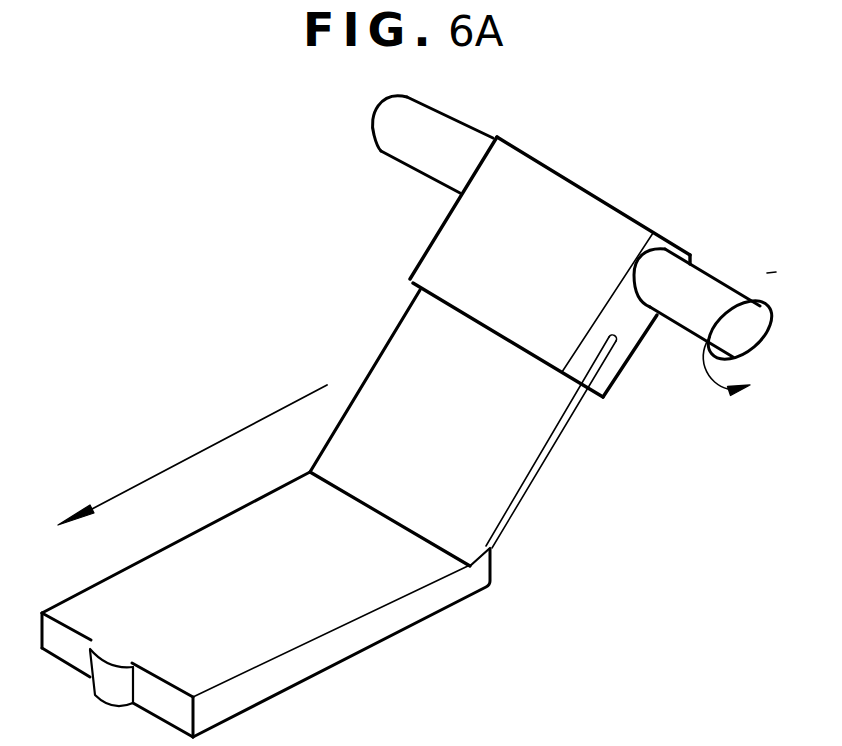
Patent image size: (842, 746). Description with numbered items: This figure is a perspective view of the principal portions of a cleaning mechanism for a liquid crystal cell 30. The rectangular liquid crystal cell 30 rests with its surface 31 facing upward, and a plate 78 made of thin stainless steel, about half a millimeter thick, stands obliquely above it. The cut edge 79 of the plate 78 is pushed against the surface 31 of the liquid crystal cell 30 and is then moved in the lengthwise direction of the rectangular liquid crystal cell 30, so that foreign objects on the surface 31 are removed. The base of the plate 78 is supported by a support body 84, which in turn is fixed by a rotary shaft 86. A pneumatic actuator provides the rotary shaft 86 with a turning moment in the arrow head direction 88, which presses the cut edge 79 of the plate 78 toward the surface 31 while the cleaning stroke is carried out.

The liquid crystal cell 30 is at (342, 647).
The surface 31 is at (239, 620).
The plate 78 is at (519, 449).
The cut edge 79 is at (410, 533).
The support body 84 is at (597, 227).
The rotary shaft 86 is at (702, 287).
The arrow head direction 88 is at (705, 391).